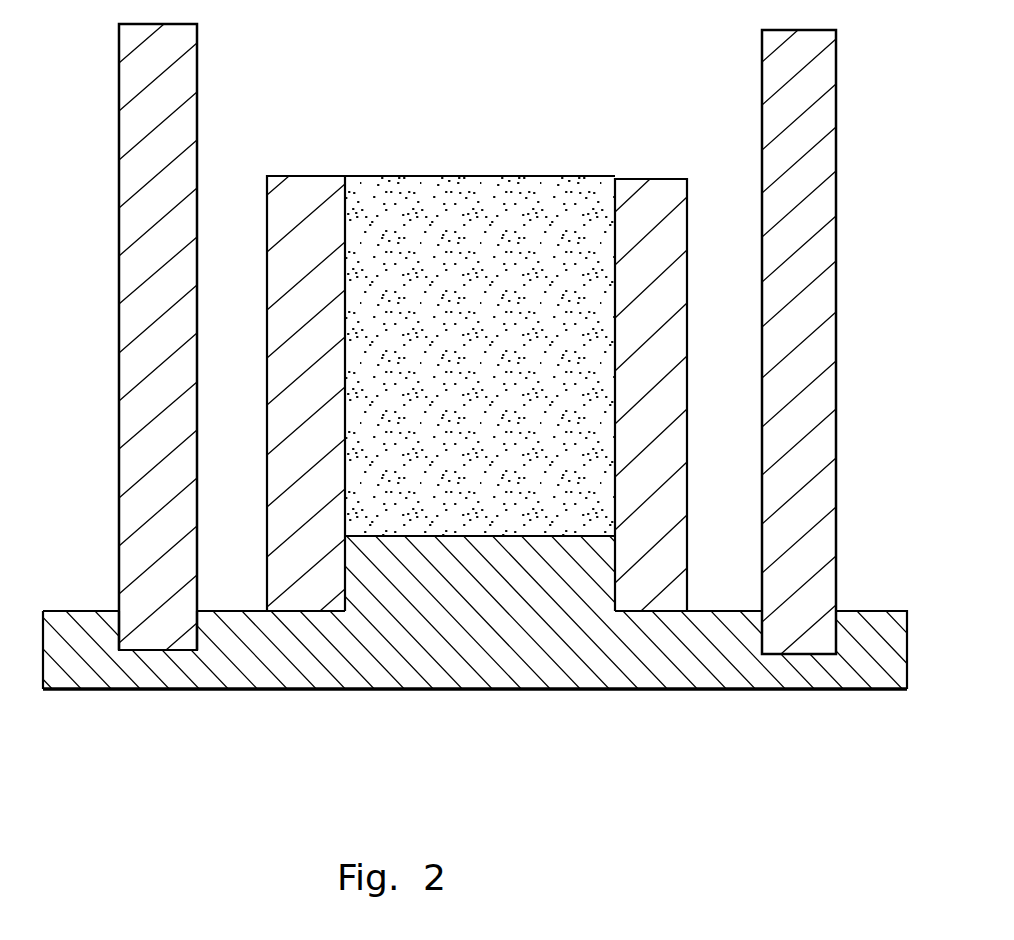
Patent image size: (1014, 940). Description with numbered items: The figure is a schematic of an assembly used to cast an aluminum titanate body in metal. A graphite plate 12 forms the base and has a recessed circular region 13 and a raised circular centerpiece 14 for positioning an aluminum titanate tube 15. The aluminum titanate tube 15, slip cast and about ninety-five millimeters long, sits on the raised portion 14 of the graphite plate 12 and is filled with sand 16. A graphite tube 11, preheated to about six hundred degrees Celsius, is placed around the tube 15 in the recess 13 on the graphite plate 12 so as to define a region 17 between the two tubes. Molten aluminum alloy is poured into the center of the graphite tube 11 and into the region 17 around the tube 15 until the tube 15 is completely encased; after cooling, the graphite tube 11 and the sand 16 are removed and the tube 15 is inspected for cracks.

The graphite tube 11 is at (198, 98).
The graphite plate 12 is at (333, 689).
The recessed circular region 13 is at (117, 629).
The raised circular centerpiece 14 is at (493, 553).
The aluminum titanate tube 15 is at (637, 179).
The sand 16 is at (480, 337).
The region 17 is at (222, 214).